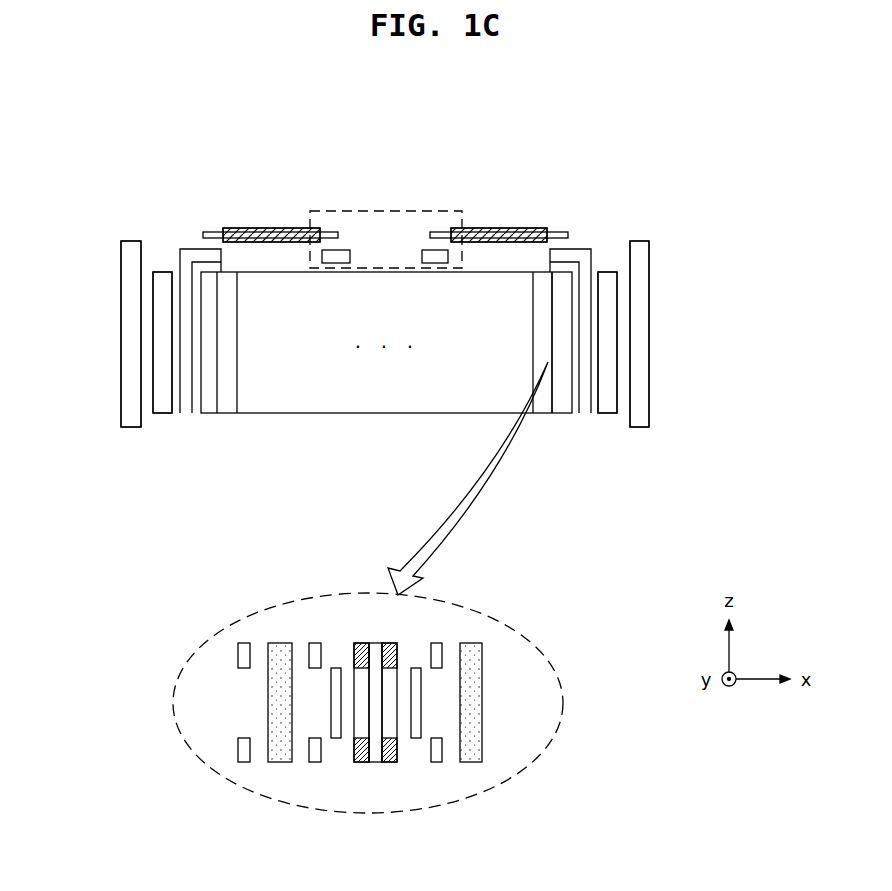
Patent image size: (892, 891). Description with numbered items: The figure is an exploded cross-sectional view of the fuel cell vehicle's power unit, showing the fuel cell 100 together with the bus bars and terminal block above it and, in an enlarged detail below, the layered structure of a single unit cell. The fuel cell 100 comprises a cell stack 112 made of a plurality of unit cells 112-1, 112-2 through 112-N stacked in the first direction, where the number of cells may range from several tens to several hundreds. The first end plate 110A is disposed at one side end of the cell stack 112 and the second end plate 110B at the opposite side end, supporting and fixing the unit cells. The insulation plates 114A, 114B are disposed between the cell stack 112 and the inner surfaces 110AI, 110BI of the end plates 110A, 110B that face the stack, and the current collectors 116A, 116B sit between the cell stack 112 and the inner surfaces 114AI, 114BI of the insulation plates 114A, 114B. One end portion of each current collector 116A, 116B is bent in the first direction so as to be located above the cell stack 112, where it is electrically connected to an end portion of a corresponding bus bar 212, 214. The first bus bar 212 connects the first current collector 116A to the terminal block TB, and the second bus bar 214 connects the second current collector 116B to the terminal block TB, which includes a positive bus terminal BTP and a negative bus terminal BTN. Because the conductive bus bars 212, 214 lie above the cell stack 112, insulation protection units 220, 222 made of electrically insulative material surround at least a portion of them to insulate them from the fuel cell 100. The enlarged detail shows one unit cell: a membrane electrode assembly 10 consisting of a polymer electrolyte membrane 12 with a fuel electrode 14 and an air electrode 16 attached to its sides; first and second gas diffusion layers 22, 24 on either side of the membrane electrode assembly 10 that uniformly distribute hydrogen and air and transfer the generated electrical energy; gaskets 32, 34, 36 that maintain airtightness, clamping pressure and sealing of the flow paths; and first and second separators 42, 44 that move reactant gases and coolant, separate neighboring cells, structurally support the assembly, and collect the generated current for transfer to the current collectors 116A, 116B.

The fuel cell 100 is at (694, 507).
The cell stack 112 is at (543, 462).
The unit cell 112-1 is at (206, 402).
The unit cell 112-2 is at (228, 402).
The unit cell 112-N is at (562, 400).
The first end plate 110A is at (131, 413).
The second end plate 110B is at (640, 413).
The inner surface of first end plate 110AI is at (143, 255).
The inner surface of second end plate 110BI is at (627, 257).
The first insulation plate 114A is at (161, 400).
The second insulation plate 114B is at (607, 400).
The inner surface of first insulation plate 114AI is at (177, 277).
The inner surface of second insulation plate 114BI is at (596, 277).
The first current collector 116A is at (185, 400).
The second current collector 116B is at (585, 400).
The first bus bar 212 is at (333, 227).
The second bus bar 214 is at (558, 227).
The insulation protection unit 220 is at (257, 243).
The insulation protection unit 222 is at (513, 243).
The terminal block TB is at (395, 210).
The positive bus terminal BTP is at (351, 246).
The negative bus terminal BTN is at (422, 246).
The membrane electrode assembly 10 is at (408, 852).
The polymer electrolyte membrane 12 is at (376, 755).
The fuel electrode 14 is at (360, 730).
The air electrode 16 is at (392, 730).
The first gas diffusion layer 22 is at (336, 730).
The second gas diffusion layer 24 is at (416, 730).
The gasket 32 is at (315, 755).
The gasket 34 is at (245, 755).
The gasket 36 is at (437, 755).
The first separator 42 is at (280, 750).
The second separator 44 is at (472, 755).